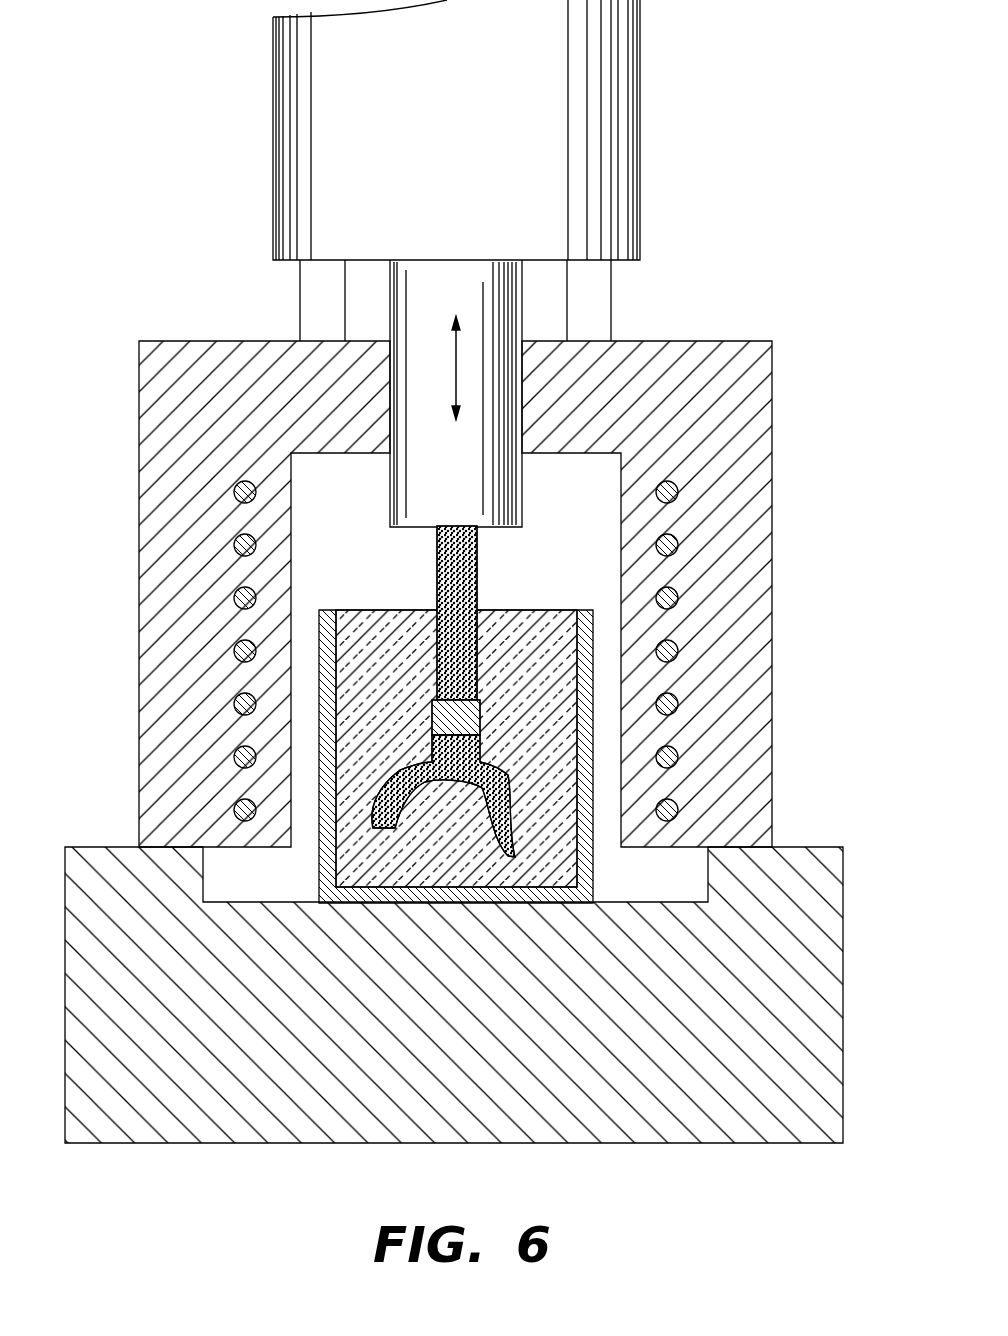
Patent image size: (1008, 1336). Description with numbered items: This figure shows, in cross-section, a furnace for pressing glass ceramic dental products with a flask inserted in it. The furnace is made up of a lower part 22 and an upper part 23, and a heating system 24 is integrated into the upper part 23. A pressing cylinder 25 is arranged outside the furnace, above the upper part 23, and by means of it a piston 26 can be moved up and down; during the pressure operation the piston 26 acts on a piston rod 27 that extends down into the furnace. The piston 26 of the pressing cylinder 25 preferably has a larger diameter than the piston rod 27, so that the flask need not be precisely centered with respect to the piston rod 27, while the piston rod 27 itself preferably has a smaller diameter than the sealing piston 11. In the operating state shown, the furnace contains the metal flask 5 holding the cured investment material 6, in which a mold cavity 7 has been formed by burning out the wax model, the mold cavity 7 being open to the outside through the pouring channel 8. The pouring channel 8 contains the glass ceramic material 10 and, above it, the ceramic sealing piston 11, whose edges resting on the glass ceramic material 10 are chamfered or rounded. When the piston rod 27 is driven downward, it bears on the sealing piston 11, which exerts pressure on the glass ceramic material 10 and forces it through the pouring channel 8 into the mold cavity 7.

The metal flask 5 is at (320, 637).
The investment material 6 is at (350, 840).
The mold cavity 7 is at (482, 753).
The pouring channel 8 is at (432, 642).
The glass ceramic material 10 is at (440, 752).
The sealing piston 11 is at (472, 720).
The lower part 22 is at (823, 1010).
The upper part 23 is at (745, 647).
The heating system 24 is at (674, 492).
The pressing cylinder 25 is at (607, 85).
The piston 26 is at (497, 318).
The piston rod 27 is at (465, 553).